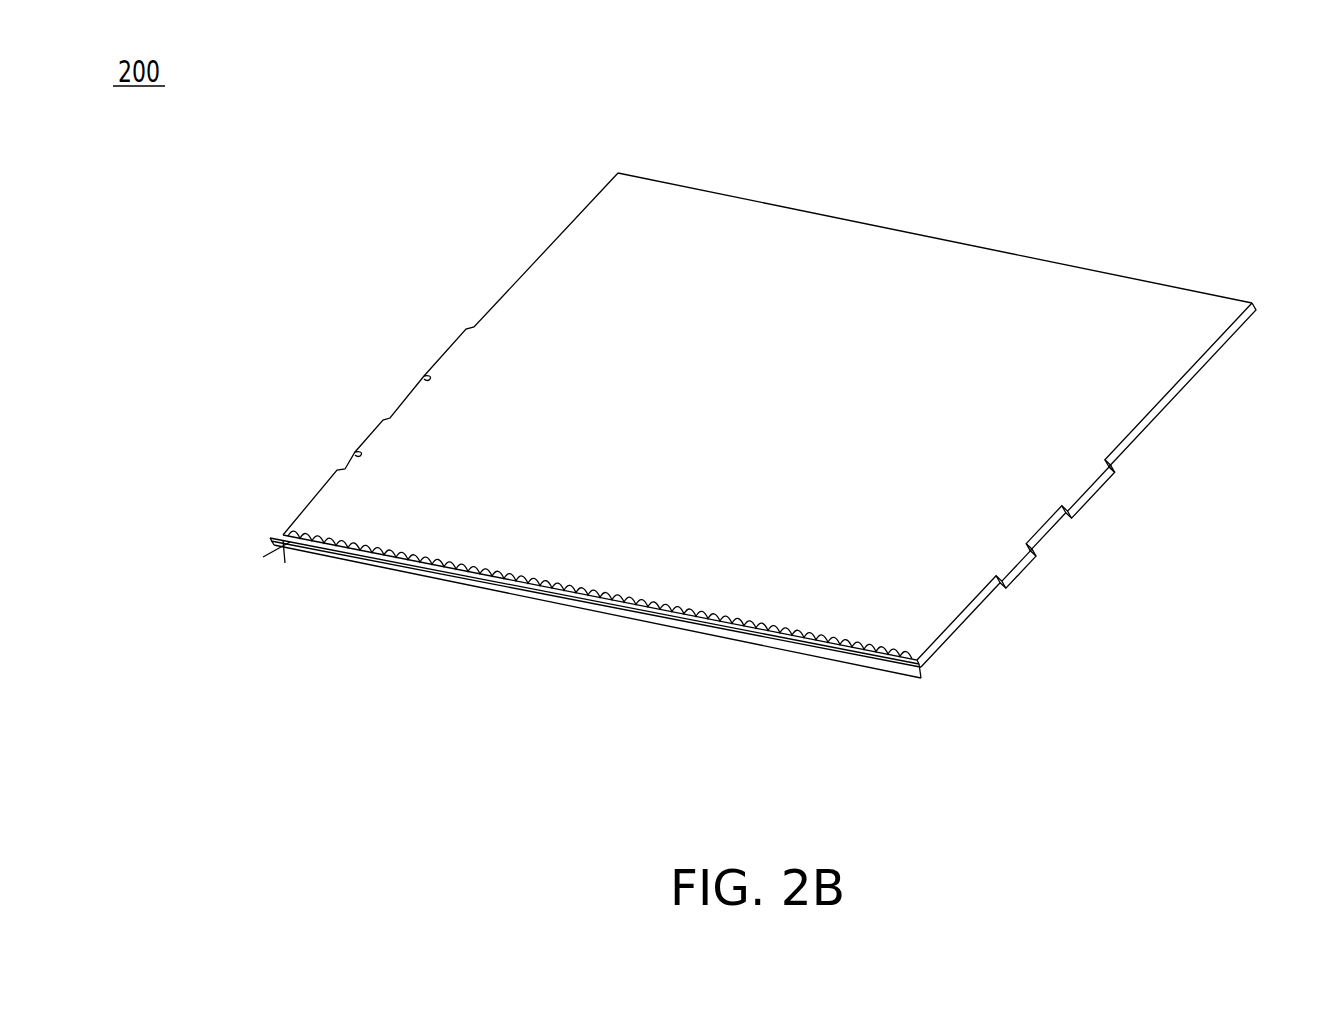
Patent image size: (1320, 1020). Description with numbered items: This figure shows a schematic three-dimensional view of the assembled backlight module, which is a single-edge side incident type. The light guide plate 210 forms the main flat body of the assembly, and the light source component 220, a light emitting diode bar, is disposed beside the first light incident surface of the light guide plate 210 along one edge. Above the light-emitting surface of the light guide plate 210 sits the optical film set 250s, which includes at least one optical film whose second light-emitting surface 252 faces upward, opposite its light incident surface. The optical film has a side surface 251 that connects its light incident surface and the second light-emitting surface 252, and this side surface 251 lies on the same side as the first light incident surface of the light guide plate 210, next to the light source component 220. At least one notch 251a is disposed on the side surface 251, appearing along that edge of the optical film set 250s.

The second light-emitting surface 252 is at (465, 467).
The light guide plate 210 is at (950, 632).
The optical film set 250s is at (1122, 451).
The light source component 220 is at (660, 623).
The notch 251a is at (388, 558).
The side surface 251 is at (281, 545).